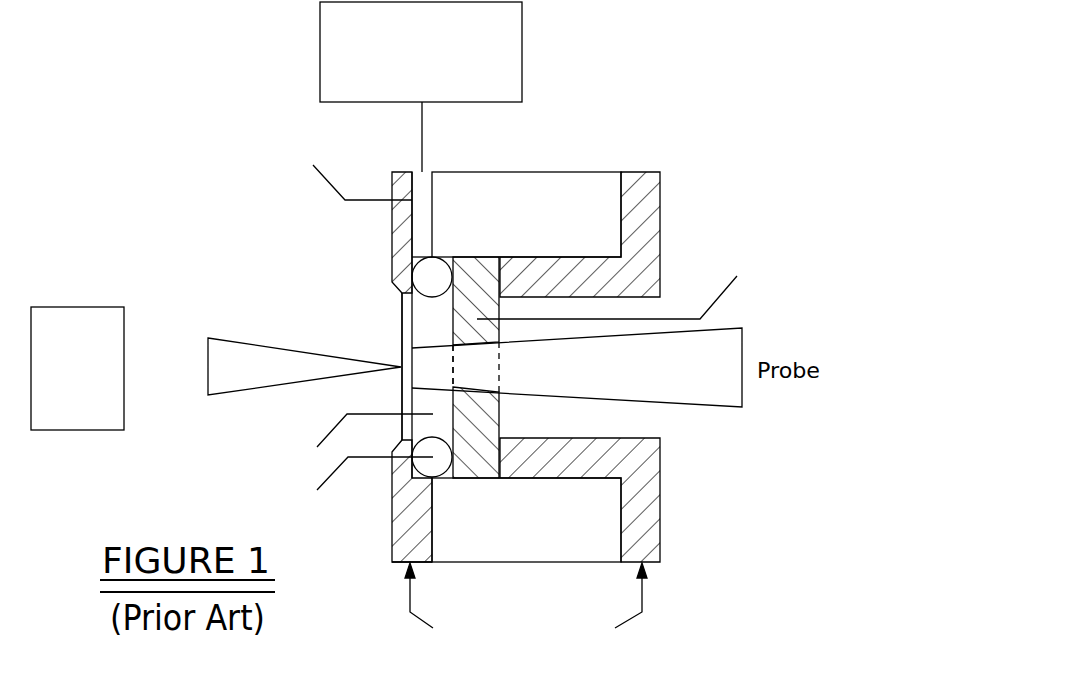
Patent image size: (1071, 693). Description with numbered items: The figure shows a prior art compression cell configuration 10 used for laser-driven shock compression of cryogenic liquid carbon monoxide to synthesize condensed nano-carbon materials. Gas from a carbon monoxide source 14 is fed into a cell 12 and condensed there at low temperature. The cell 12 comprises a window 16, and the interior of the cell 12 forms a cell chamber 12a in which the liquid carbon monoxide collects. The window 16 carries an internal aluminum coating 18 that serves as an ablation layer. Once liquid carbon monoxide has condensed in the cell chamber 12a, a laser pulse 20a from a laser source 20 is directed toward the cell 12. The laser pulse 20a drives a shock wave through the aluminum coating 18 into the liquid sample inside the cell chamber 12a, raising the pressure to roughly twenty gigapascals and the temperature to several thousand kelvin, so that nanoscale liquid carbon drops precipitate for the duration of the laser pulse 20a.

The compression cell configuration 10 is at (624, 128).
The cell 12 is at (496, 417).
The cell chamber 12a is at (425, 333).
The carbon monoxide source 14 is at (320, 52).
The window 16 is at (412, 388).
The internal aluminum coating 18 is at (412, 326).
The laser source 20 is at (78, 307).
The laser pulse 20a is at (252, 357).